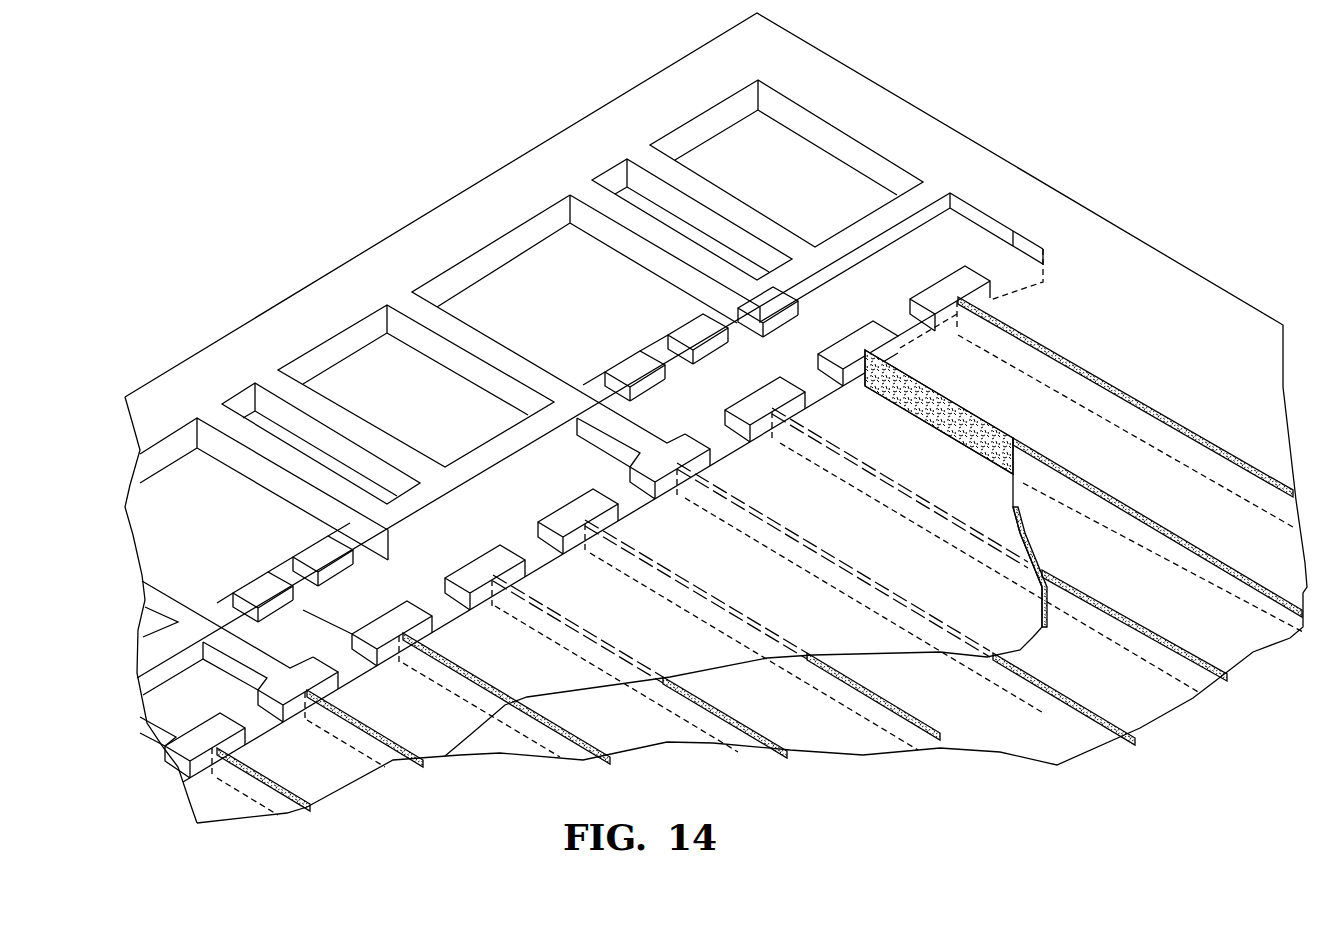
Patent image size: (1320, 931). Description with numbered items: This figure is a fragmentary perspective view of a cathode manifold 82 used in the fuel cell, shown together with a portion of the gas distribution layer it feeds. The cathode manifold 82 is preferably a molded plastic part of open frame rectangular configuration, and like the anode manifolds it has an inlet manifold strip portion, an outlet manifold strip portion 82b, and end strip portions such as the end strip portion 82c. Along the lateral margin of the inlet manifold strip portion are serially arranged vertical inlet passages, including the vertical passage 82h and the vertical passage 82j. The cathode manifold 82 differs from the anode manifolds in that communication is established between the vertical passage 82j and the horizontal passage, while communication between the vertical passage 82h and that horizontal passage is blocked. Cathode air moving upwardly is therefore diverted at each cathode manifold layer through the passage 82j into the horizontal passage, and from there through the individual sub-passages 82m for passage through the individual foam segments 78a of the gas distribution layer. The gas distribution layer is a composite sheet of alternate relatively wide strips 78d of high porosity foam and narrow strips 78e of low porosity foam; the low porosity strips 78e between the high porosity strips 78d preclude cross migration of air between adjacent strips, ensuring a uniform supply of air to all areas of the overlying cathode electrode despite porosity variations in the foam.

The cathode manifold 82 is at (421, 190).
The outlet manifold strip portion 82b is at (955, 238).
The end strip portion 82c is at (612, 182).
The vertical inlet passage 82h is at (862, 146).
The vertical inlet passage 82j is at (450, 316).
The sub-passage 82m is at (708, 462).
The foam segment 78a is at (1149, 333).
The high porosity strip 78d is at (1112, 575).
The low porosity strip 78e is at (1133, 618).